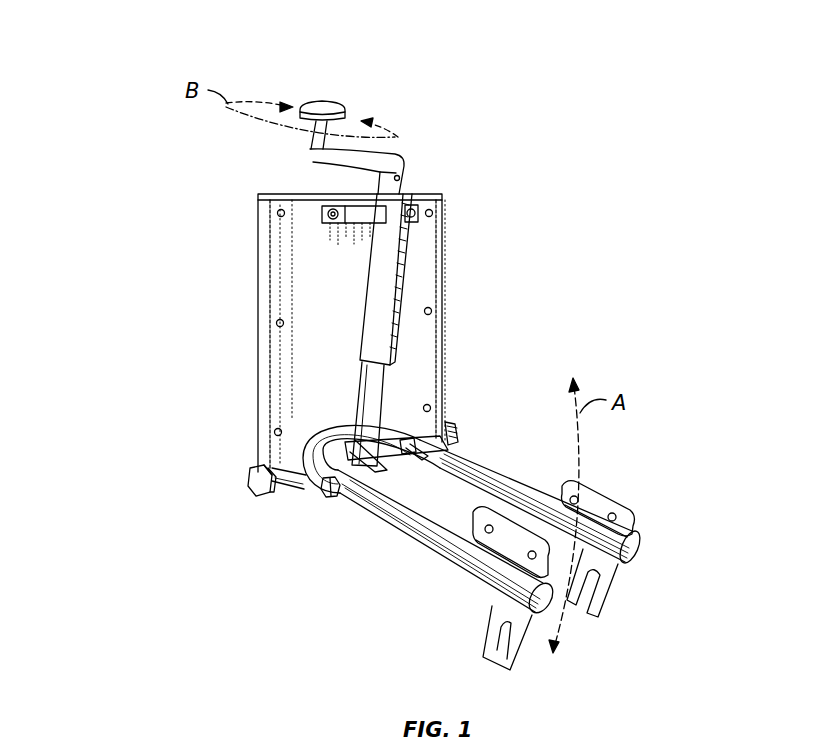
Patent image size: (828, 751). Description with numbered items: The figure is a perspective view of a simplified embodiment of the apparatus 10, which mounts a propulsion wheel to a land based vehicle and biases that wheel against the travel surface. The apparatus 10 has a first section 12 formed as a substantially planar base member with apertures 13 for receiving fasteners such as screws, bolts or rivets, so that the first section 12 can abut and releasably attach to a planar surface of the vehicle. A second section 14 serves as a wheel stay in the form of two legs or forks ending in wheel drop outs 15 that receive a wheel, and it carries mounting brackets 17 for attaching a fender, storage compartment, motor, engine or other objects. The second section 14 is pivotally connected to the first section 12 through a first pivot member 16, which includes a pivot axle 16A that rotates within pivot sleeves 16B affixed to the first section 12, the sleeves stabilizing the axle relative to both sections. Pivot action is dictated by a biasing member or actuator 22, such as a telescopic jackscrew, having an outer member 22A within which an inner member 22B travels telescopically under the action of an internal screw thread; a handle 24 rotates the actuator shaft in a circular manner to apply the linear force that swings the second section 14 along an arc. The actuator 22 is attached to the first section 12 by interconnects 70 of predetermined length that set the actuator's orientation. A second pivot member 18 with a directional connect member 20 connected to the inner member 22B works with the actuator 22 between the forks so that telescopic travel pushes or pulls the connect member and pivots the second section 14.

The apparatus 10 is at (150, 136).
The first section 12 is at (441, 248).
The apertures 13 is at (280, 216).
The second section 14 is at (446, 548).
The wheel drop outs 15 is at (484, 645).
The first pivot member 16 is at (452, 428).
The pivot axle 16A is at (258, 481).
The pivot sleeves 16B is at (286, 492).
The mounting brackets 17 is at (596, 492).
The second pivot member 18 is at (422, 460).
The directional connect member 20 is at (408, 449).
The actuator 22 is at (390, 350).
The outer member 22A is at (400, 307).
The inner member 22B is at (383, 396).
The handle 24 is at (321, 103).
The interconnects 70 is at (357, 207).